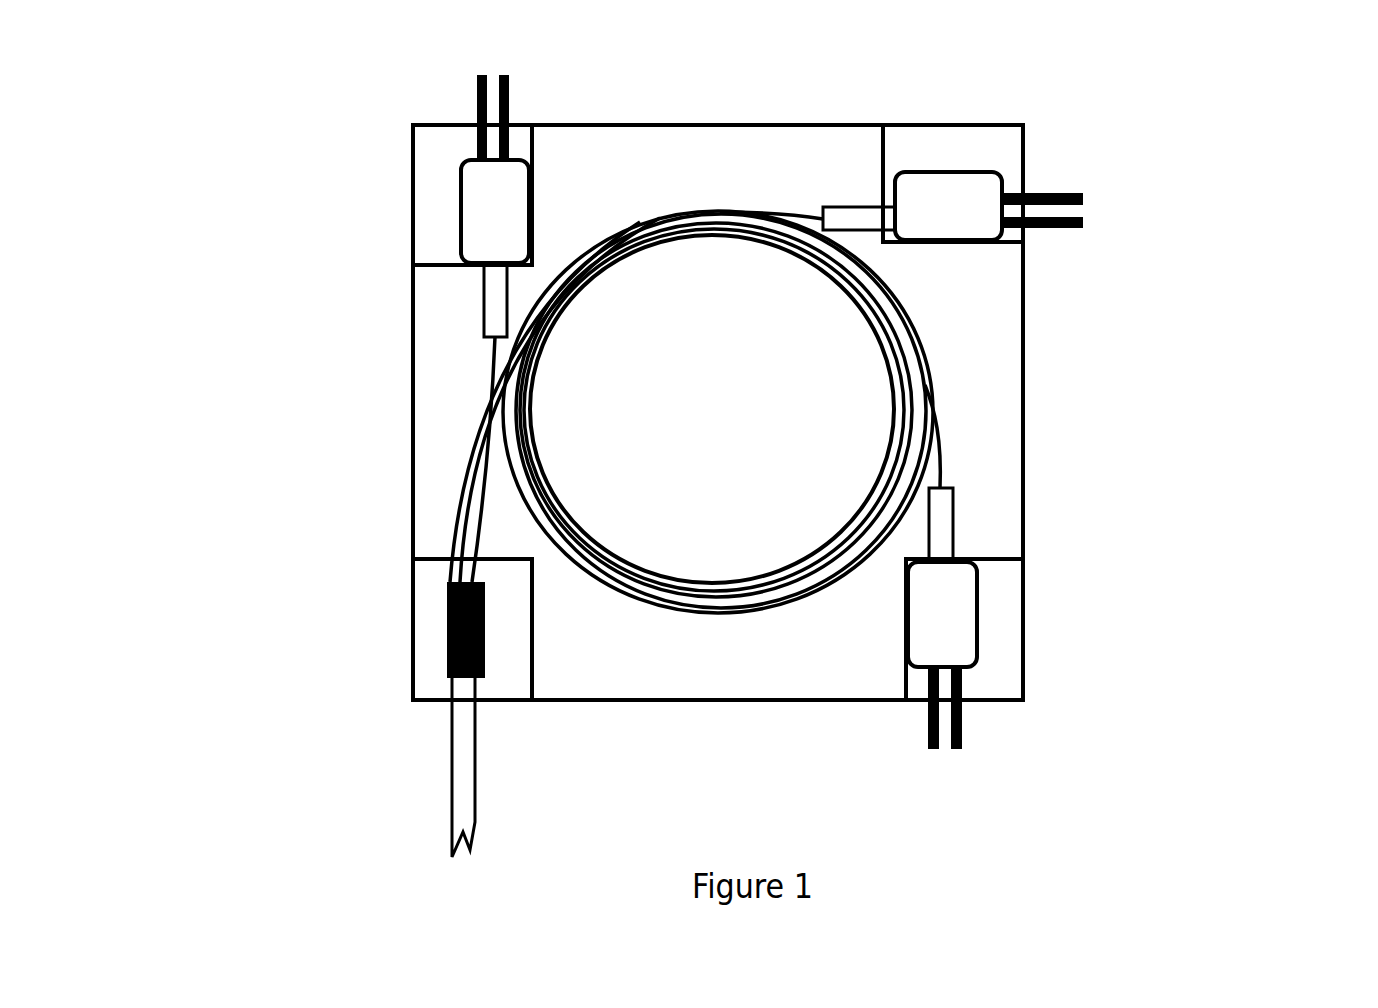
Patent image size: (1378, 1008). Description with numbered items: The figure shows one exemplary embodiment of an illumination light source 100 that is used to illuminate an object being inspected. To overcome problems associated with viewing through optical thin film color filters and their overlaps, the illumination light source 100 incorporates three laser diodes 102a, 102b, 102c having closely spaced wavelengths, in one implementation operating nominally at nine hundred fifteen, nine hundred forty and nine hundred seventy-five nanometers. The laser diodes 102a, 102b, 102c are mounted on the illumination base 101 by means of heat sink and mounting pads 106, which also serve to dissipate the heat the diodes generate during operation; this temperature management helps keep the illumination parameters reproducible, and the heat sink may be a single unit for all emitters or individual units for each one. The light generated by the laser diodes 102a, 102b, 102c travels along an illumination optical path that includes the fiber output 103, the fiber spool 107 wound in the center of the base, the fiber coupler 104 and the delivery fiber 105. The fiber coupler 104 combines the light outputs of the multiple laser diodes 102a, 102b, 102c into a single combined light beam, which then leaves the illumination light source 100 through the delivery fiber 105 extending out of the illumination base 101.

The illumination light source 100 is at (718, 359).
The illumination base 101 is at (978, 337).
The laser diode 102a is at (469, 206).
The laser diode 102b is at (983, 221).
The laser diode 102c is at (968, 611).
The fiber output 103 is at (469, 369).
The fiber coupler 104 is at (435, 629).
The delivery fiber 105 is at (457, 734).
The heat sink and mounting pad 106 is at (977, 146).
The fiber spool 107 is at (712, 409).